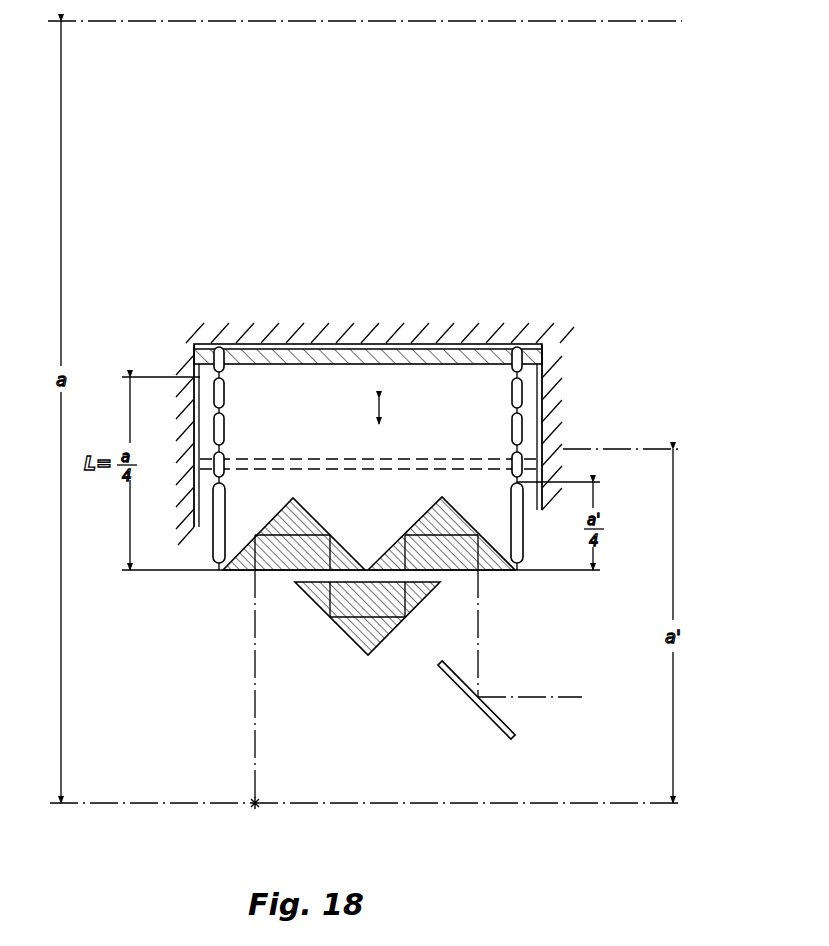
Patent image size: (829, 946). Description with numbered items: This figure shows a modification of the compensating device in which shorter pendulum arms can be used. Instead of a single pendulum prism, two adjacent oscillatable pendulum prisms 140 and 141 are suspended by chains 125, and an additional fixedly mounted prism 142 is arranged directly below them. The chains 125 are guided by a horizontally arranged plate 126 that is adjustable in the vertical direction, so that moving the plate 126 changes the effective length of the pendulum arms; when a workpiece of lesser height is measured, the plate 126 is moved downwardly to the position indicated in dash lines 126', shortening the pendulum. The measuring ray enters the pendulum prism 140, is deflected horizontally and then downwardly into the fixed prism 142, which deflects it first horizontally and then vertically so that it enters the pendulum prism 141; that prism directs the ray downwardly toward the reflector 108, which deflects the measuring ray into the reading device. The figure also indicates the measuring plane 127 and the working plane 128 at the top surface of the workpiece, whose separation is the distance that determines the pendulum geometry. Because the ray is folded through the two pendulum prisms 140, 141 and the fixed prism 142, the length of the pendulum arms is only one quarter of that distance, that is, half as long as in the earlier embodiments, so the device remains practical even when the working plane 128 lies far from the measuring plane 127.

The working plane 128 is at (229, 23).
The measuring plane 127 is at (340, 803).
The plate 126 is at (368, 333).
The lowered position of plate 126' is at (368, 447).
The chains 125 is at (222, 398).
The pendulum prism 140 is at (280, 526).
The pendulum prism 141 is at (410, 525).
The fixedly mounted prism 142 is at (341, 621).
The reflector 108 is at (483, 718).